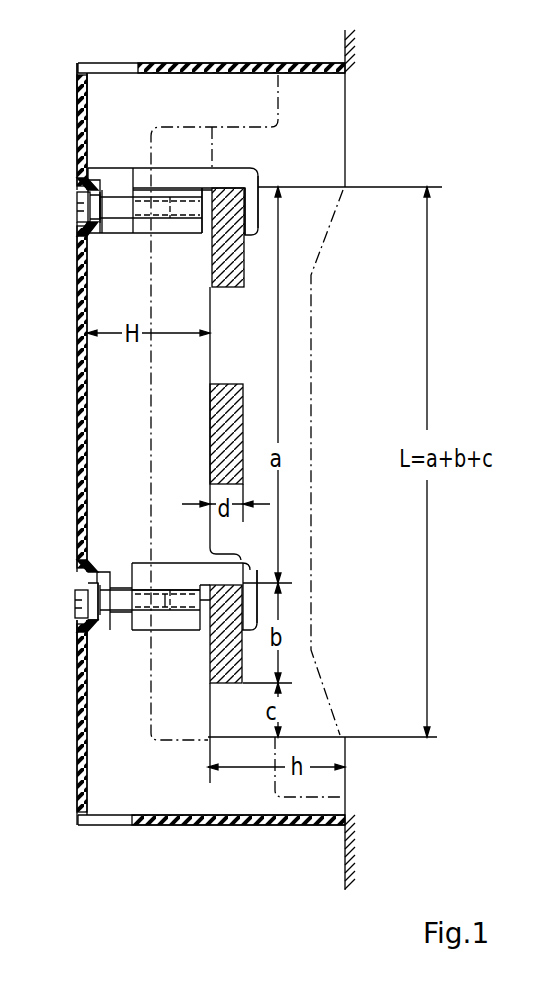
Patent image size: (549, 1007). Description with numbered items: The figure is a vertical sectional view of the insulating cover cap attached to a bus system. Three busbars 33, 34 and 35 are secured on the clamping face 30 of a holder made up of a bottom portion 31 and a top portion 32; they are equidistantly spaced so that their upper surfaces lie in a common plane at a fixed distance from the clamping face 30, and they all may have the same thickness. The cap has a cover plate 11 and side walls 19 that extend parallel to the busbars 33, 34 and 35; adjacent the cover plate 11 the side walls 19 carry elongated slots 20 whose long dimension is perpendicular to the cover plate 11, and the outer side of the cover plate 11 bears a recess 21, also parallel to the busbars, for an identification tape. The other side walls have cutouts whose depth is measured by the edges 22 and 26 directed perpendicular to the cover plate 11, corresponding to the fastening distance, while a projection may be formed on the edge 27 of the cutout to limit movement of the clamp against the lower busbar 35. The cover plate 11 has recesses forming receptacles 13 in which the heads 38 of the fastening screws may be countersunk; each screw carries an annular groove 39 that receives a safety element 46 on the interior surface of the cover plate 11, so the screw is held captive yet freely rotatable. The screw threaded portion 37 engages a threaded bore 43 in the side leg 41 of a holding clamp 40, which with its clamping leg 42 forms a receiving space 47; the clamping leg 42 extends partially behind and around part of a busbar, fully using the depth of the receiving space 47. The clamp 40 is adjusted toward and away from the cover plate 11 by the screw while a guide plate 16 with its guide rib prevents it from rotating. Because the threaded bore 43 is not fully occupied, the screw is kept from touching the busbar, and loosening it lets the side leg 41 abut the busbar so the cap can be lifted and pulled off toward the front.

The cover plate 11 is at (80, 297).
The receptacle 13 is at (80, 622).
The guide plate 16 is at (112, 230).
The side wall 19 is at (218, 63).
The elongated slot 20 is at (110, 63).
The recess 21 is at (80, 100).
The edge 22 is at (310, 186).
The edge 26 is at (312, 737).
The edge 27 is at (213, 362).
The clamping face 30 is at (346, 862).
The bottom portion 31 is at (292, 488).
The top portion 32 is at (186, 725).
The busbar 33 is at (228, 258).
The busbar 34 is at (237, 430).
The busbar 35 is at (228, 680).
The screw threaded portion 37 is at (115, 597).
The head 38 is at (80, 206).
The annular groove 39 is at (100, 615).
The holding clamp 40 is at (167, 563).
The side leg 41 is at (145, 622).
The clamping leg 42 is at (256, 222).
The threaded bore 43 is at (178, 622).
The safety element 46 is at (107, 185).
The receiving space 47 is at (205, 232).